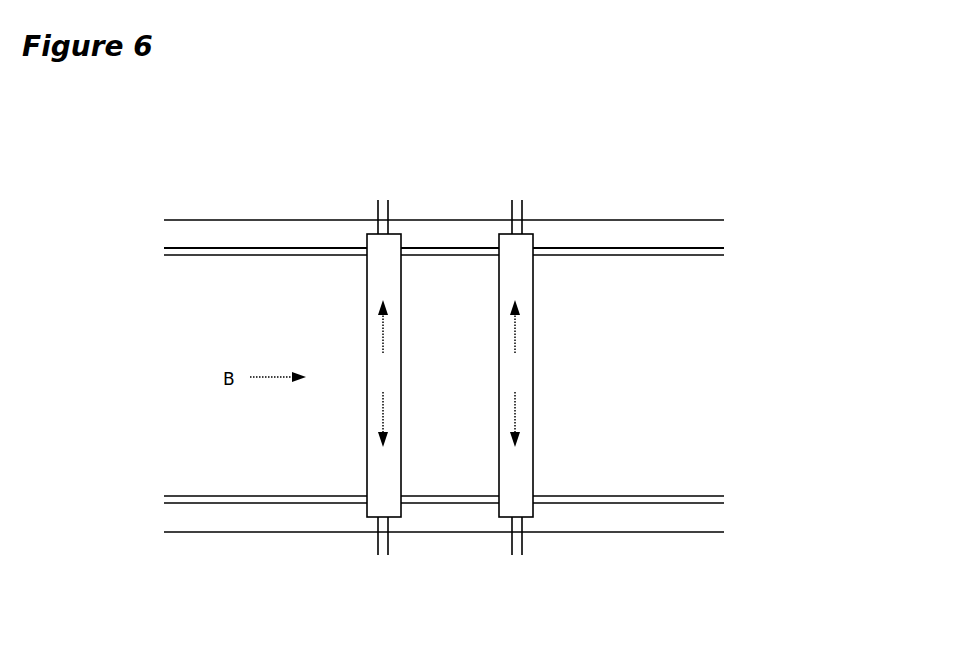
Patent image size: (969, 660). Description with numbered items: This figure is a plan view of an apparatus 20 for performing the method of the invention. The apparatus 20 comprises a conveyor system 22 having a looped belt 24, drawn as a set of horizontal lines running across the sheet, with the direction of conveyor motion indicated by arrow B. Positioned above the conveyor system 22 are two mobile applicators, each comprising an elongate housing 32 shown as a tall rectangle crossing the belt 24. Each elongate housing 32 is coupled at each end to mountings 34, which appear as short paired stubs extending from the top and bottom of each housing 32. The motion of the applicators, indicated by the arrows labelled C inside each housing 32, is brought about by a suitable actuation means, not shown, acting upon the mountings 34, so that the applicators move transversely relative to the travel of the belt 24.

The apparatus 20 is at (602, 170).
The conveyor system 22 is at (254, 220).
The looped belt 24 is at (195, 410).
The elongate housing 32 is at (367, 269).
The mountings 34 is at (517, 200).